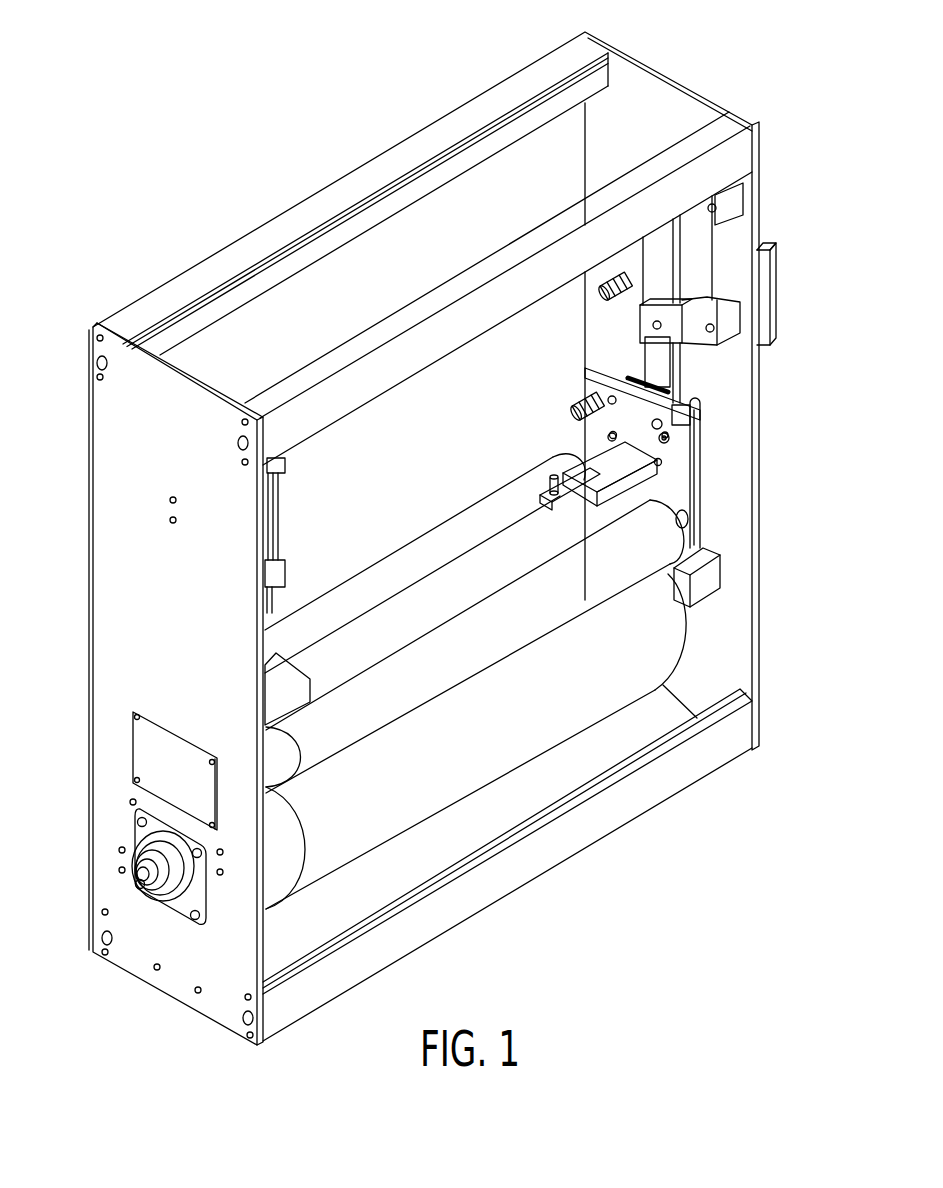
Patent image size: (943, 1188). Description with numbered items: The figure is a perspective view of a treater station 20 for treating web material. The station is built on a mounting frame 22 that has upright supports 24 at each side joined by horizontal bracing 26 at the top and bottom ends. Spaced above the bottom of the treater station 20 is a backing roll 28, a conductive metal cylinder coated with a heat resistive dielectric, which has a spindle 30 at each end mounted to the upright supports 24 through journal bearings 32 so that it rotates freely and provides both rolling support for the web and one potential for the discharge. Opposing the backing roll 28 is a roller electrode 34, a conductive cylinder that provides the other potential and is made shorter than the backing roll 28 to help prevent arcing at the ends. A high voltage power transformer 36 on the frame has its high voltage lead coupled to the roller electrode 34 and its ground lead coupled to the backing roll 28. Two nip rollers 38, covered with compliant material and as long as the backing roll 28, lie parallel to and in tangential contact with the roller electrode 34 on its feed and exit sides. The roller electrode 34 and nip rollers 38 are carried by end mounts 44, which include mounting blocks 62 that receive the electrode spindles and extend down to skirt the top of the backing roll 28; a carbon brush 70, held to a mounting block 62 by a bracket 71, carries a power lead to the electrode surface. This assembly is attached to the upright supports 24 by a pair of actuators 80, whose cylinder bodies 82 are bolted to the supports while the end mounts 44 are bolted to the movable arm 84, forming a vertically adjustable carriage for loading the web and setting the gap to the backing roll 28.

The treater station 20 is at (688, 50).
The mounting frame 22 is at (748, 112).
The upright supports 24 is at (100, 607).
The horizontal bracing 26 is at (517, 245).
The backing roll 28 is at (388, 835).
The spindle 30 is at (143, 884).
The journal bearings 32 is at (186, 917).
The roller electrode 34 is at (407, 595).
The high voltage power transformer 36 is at (777, 292).
The nip rollers 38 is at (477, 510).
The end mounts 44 is at (703, 440).
The mounting blocks 62 is at (287, 707).
The carbon brush 70 is at (550, 478).
The bracket 71 is at (548, 512).
The actuators 80 is at (662, 282).
The cylinder bodies 82 is at (695, 265).
The movable arm 84 is at (693, 403).